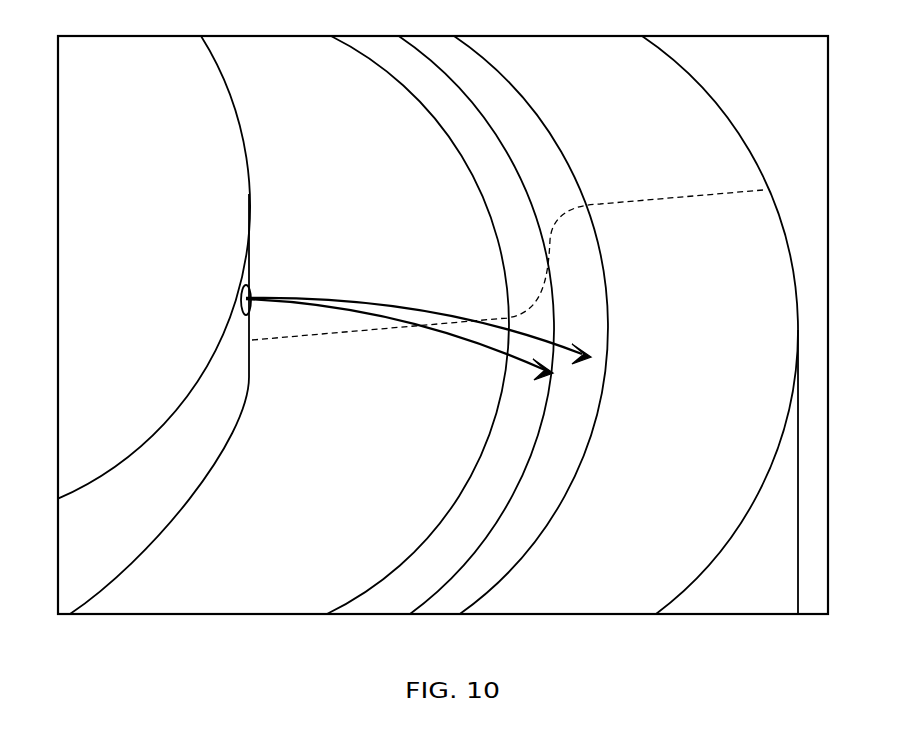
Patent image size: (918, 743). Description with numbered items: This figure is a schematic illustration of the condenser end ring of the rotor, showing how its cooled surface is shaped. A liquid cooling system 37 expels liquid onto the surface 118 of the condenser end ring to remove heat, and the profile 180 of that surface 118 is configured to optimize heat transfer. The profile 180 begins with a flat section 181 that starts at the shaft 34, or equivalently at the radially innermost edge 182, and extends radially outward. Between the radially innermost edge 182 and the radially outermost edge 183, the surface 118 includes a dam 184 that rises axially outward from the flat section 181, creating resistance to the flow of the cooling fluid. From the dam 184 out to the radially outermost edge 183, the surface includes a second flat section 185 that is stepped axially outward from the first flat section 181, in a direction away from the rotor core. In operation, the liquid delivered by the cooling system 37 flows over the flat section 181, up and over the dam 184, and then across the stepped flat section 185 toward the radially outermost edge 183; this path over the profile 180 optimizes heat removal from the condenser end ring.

The shaft 34 is at (249, 193).
The liquid cooling system 37 is at (251, 291).
The surface 118 is at (588, 130).
The profile 180 is at (546, 291).
The flat section 181 is at (407, 377).
The radially innermost edge 182 is at (249, 377).
The radially outermost edge 183 is at (744, 148).
The dam 184 is at (512, 516).
The flat section 185 is at (507, 265).